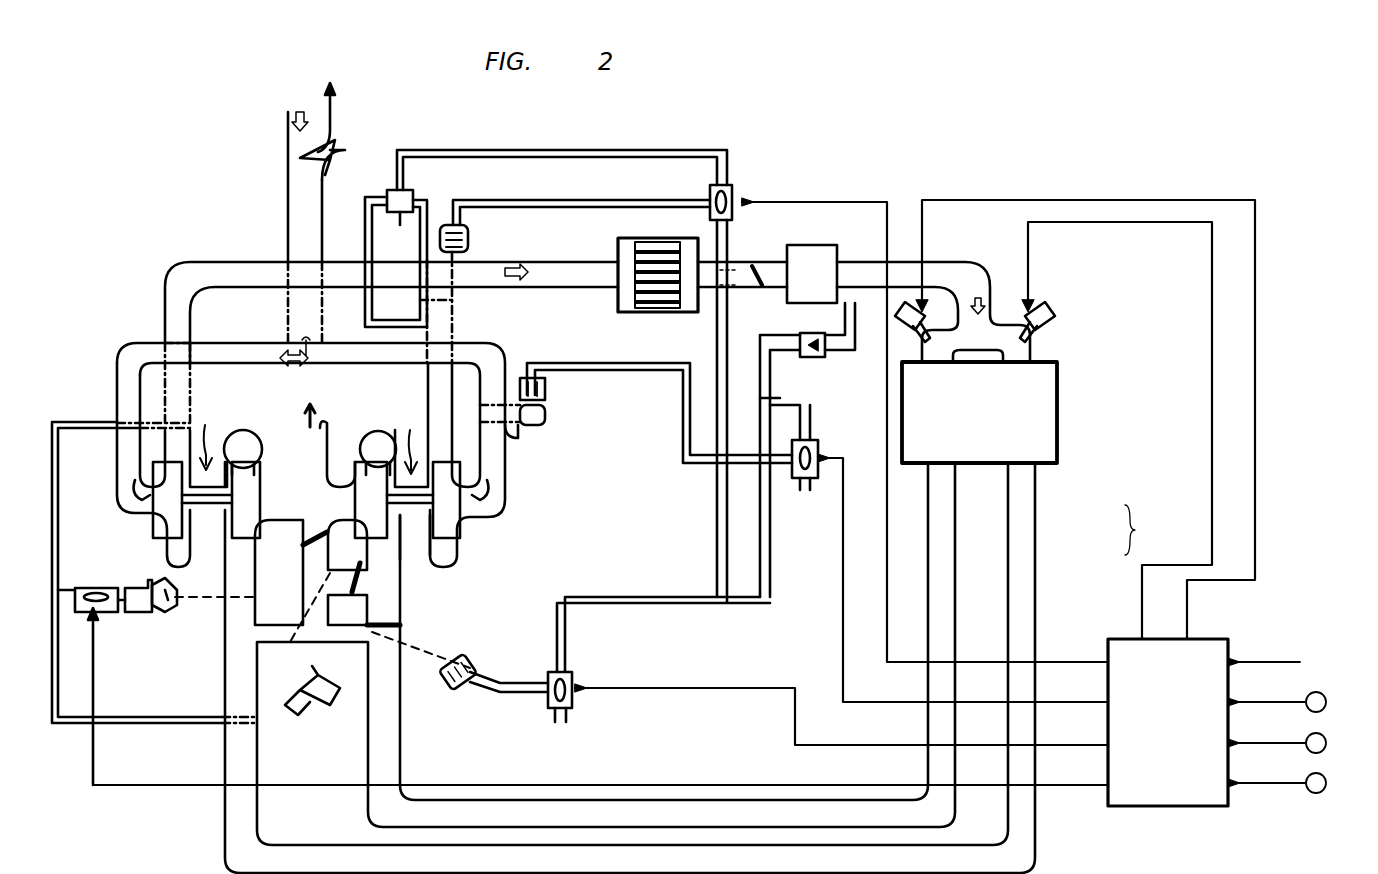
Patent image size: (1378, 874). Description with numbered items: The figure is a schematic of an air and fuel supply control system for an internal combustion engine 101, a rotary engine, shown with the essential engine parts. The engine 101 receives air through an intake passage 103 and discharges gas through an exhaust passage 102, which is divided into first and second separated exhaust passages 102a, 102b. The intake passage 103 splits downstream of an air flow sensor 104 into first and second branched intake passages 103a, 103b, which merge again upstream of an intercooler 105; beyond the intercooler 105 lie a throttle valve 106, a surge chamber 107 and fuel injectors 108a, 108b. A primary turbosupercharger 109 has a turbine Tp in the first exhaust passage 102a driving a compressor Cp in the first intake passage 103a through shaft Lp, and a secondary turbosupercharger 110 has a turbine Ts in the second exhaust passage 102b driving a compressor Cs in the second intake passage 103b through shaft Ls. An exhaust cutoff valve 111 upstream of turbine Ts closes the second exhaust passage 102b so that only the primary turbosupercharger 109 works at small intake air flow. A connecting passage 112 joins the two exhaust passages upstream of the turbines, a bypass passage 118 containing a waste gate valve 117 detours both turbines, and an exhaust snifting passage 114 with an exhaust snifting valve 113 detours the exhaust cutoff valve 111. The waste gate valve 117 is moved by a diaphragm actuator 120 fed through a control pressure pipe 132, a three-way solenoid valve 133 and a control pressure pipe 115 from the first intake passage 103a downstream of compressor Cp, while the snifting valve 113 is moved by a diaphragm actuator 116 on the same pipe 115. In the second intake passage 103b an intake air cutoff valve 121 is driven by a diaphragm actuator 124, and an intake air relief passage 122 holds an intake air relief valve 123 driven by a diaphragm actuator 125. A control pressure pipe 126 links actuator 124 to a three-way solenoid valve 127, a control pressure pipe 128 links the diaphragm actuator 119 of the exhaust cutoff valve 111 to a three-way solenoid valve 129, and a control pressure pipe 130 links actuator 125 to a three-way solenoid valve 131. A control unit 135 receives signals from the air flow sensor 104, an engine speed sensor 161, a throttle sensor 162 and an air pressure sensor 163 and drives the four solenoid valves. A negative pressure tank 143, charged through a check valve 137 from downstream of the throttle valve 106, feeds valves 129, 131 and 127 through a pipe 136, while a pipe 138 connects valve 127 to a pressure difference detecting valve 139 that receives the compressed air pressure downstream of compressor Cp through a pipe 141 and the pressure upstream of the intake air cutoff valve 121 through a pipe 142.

The internal combustion engine 101 is at (1057, 385).
The exhaust passage 102 is at (330, 430).
The first separated exhaust passage 102a is at (223, 670).
The second separated exhaust passage 102b is at (400, 735).
The intake passage 103 is at (286, 217).
The first branched intake passage 103a is at (170, 330).
The second branched intake passage 103b is at (455, 308).
The air flow sensor 104 is at (348, 140).
The intercooler 105 is at (650, 312).
The throttle valve 106 is at (758, 288).
The surge chamber 107 is at (800, 245).
The fuel injector 108a is at (912, 340).
The fuel injector 108b is at (1030, 340).
The primary turbosupercharger 109 is at (216, 433).
The secondary turbosupercharger 110 is at (421, 435).
The exhaust cutoff valve 111 is at (400, 634).
The connecting passage 112 is at (327, 680).
The exhaust snifting valve 113 is at (358, 588).
The exhaust snifting passage 114 is at (362, 566).
The control pressure pipe 115 is at (74, 500).
The diaphragm actuator 116 is at (632, 654).
The waste gate valve 117 is at (312, 532).
The bypass passage 118 is at (239, 572).
The diaphragm actuator 119 is at (462, 692).
The diaphragm actuator 120 is at (166, 608).
The intake air cutoff valve 121 is at (445, 305).
The intake air relief passage 122 is at (522, 440).
The intake air relief valve 123 is at (547, 420).
The diaphragm actuator 124 is at (470, 236).
The diaphragm actuator 125 is at (547, 388).
The control pressure pipe 126 is at (606, 200).
The three-way solenoid valve 127 is at (708, 192).
The control pressure pipe 128 is at (524, 672).
The three-way solenoid valve 129 is at (575, 668).
The control pressure pipe 130 is at (694, 458).
The three-way solenoid valve 131 is at (820, 446).
The control pressure pipe 132 is at (125, 614).
The three-way solenoid valve 133 is at (96, 586).
The control unit 135 is at (1133, 806).
The pipe 136 is at (716, 346).
The check valve 137 is at (843, 334).
The pipe 138 is at (598, 150).
The pressure difference detecting valve 139 is at (387, 195).
The pipe 141 is at (418, 198).
The pipe 142 is at (362, 250).
The negative pressure tank 143 is at (782, 398).
The engine speed sensor 161 is at (1326, 698).
The throttle sensor 162 is at (1326, 739).
The air pressure sensor 163 is at (1326, 779).